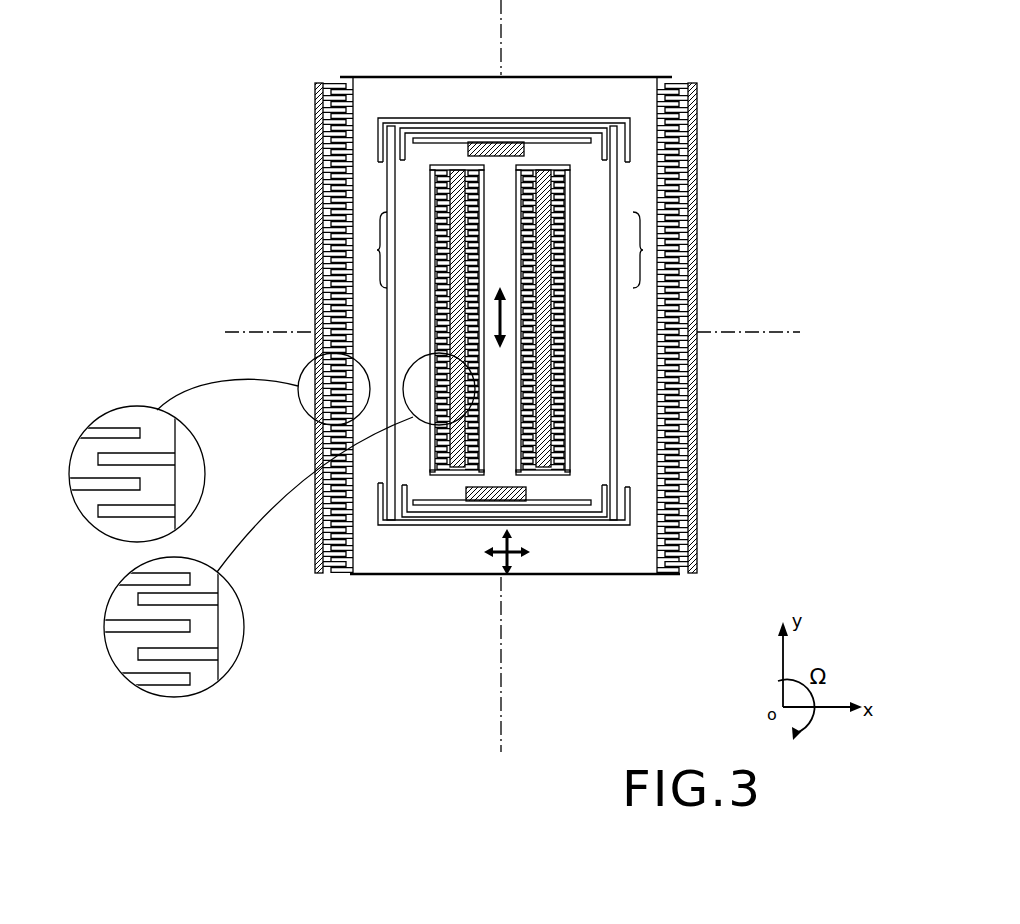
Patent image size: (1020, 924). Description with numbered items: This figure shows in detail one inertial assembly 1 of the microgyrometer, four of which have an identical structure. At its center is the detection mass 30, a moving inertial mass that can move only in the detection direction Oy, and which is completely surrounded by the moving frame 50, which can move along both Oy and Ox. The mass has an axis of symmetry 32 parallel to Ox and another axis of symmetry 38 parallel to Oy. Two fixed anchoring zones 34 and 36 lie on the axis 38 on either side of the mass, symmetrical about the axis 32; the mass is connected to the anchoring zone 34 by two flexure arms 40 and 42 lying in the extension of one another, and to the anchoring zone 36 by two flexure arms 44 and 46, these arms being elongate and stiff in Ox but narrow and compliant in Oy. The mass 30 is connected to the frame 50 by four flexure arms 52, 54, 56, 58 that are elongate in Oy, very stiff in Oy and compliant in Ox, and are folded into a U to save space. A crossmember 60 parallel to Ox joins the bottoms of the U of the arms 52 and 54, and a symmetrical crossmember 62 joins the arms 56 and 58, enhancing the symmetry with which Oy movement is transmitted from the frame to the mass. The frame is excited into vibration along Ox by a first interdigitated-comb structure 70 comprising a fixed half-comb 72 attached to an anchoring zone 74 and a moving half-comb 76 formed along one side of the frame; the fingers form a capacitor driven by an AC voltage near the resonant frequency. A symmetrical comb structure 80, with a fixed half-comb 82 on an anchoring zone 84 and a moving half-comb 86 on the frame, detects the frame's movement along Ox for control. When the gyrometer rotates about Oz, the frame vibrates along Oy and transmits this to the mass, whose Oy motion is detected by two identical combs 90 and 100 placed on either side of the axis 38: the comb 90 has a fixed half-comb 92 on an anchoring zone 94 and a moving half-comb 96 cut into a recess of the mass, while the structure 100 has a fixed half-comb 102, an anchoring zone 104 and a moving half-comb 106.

The inertial assembly 1 is at (752, 236).
The detection mass 30 is at (542, 152).
The axis of symmetry 32 is at (785, 333).
The anchoring zone 34 is at (501, 142).
The anchoring zone 36 is at (512, 503).
The axis of symmetry 38 is at (503, 707).
The flexure arm 40 is at (436, 140).
The flexure arm 42 is at (575, 142).
The flexure arm 44 is at (437, 510).
The flexure arm 46 is at (553, 512).
The moving frame 50 is at (470, 575).
The flexure arm 52 is at (380, 142).
The flexure arm 54 is at (610, 135).
The flexure arm 56 is at (386, 525).
The flexure arm 58 is at (612, 523).
The crossmember 60 is at (459, 127).
The crossmember 62 is at (455, 525).
The first interdigitated-comb structure 70 is at (390, 637).
The fixed half-comb 72 is at (335, 574).
The anchoring zone 74 is at (318, 98).
The moving half-comb 76 is at (343, 574).
The interdigitated-comb structure 80 is at (690, 637).
The fixed half-comb 82 is at (672, 576).
The anchoring zone 84 is at (697, 565).
The moving half-comb 86 is at (662, 576).
The interdigitated comb 90 is at (282, 432).
The fixed half-comb 92 is at (438, 240).
The anchoring zone 94 is at (460, 203).
The moving half-comb 96 is at (438, 291).
The interdigitated structure 100 is at (592, 320).
The fixed half-comb 102 is at (560, 292).
The anchoring zone 104 is at (555, 378).
The moving half-comb 106 is at (530, 240).